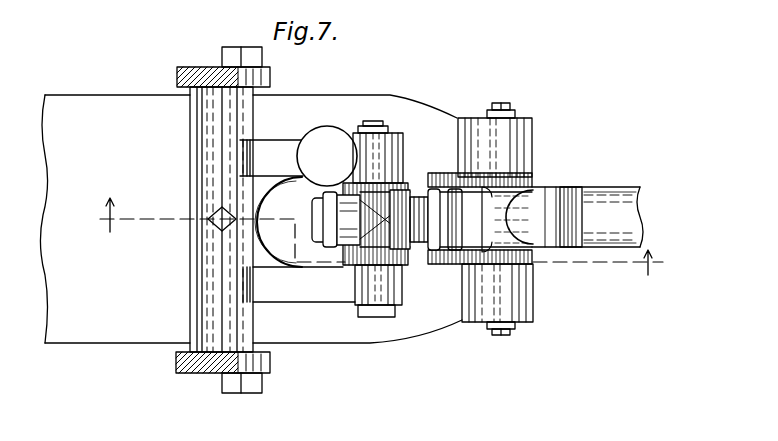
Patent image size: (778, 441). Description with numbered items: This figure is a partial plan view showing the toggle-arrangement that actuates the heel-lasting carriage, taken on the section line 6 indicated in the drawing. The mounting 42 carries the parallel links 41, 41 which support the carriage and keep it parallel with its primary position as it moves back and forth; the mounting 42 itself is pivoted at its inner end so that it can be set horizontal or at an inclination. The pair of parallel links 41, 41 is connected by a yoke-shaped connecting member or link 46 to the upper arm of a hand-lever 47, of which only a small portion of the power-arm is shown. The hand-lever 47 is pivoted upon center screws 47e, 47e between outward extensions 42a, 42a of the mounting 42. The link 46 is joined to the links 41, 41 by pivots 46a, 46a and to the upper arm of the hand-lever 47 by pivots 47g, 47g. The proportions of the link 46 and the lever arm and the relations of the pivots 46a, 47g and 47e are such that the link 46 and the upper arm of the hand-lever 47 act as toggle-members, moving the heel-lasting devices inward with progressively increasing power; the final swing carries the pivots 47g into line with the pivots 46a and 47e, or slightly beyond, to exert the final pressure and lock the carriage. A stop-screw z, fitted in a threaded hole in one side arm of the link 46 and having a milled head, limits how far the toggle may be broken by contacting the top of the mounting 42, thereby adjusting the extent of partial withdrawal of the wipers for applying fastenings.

The parallel links 41 is at (177, 73).
The mounting 42 is at (83, 340).
The outward extensions of the mounting 42a is at (532, 140).
The yoke-shaped connecting member or link 46 is at (190, 193).
The pivots 46a is at (210, 387).
The hand-lever 47 is at (600, 188).
The center screws 47e is at (503, 103).
The pivots 47g is at (377, 127).
The stop-screw z is at (322, 134).
The section line 6- 6 is at (379, 236).